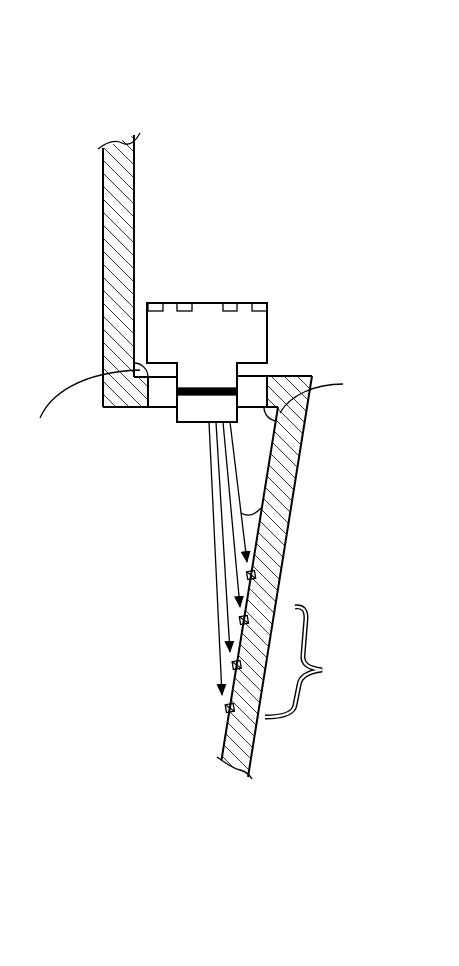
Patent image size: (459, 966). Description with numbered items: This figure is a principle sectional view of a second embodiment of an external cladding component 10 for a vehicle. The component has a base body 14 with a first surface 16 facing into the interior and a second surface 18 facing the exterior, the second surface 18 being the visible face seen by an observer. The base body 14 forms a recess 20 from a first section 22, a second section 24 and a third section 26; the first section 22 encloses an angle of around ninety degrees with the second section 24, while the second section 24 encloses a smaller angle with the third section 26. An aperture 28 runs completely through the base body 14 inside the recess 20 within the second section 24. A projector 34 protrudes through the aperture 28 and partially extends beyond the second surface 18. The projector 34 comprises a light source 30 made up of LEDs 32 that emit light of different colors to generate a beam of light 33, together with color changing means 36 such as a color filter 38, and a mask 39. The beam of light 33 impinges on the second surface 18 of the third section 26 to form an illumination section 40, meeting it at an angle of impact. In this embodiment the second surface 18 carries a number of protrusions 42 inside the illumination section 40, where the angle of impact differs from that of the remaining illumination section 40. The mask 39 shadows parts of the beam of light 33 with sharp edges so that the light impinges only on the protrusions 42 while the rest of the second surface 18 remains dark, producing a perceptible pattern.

The external cladding component 10 is at (95, 82).
The base body 14 is at (229, 455).
The first surface 16 is at (137, 163).
The second surface 18 is at (103, 193).
The recess 20 is at (250, 438).
The first section 22 is at (127, 207).
The second section 24 is at (140, 405).
The third section 26 is at (277, 555).
The aperture 28 is at (163, 398).
The light source 30 is at (294, 319).
The LEDs 32 is at (240, 293).
The beam of light 33 is at (192, 542).
The projector 34 is at (268, 325).
The color changing means 36 is at (309, 359).
The color filter 38 is at (309, 359).
The mask 39 is at (207, 388).
The illumination section 40 is at (314, 643).
The protrusions 42 is at (257, 580).